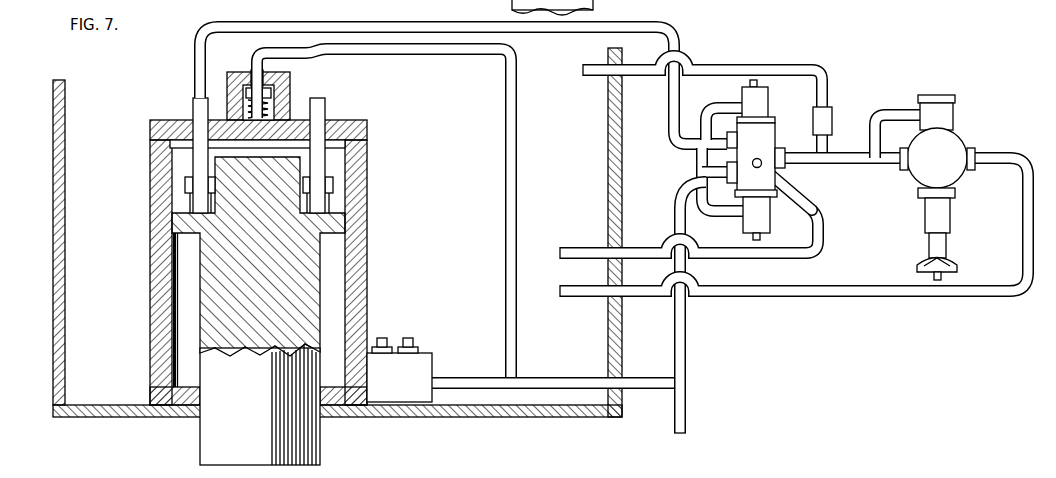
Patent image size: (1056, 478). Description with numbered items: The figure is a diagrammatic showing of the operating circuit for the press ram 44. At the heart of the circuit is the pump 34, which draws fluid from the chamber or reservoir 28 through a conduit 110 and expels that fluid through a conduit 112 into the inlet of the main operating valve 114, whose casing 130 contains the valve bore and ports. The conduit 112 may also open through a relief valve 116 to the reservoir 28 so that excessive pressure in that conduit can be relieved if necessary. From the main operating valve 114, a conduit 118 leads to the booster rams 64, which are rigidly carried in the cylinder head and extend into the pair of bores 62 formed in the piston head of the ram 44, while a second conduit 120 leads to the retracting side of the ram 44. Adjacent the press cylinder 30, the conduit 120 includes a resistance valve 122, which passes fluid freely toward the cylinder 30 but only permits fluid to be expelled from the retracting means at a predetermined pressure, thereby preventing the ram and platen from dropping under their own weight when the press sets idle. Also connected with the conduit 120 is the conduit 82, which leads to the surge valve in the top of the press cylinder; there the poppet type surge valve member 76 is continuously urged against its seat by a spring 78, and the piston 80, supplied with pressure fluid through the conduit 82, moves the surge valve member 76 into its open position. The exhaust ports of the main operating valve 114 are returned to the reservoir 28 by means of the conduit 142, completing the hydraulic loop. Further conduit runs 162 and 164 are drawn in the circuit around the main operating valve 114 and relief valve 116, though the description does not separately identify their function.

The chamber 28 is at (608, 160).
The cylinder 30 is at (360, 190).
The pump 34 is at (951, 169).
The ram 44 is at (307, 287).
The bores 62 is at (187, 168).
The booster rams 64 is at (194, 108).
The surge valve member 76 is at (289, 92).
The spring 78 is at (272, 112).
The piston 80 is at (262, 97).
The conduit 82 is at (448, 61).
The conduit 110 is at (1025, 249).
The conduit 112 is at (853, 160).
The main operating valve 114 is at (770, 140).
The relief valve 116 is at (833, 117).
The conduit 118 is at (677, 45).
The conduit 120 is at (673, 220).
The resistance valve 122 is at (425, 360).
The casing 130 is at (631, 7).
The conduit 142 is at (824, 236).
The conduit 162 is at (786, 68).
The conduit 164 is at (724, 106).